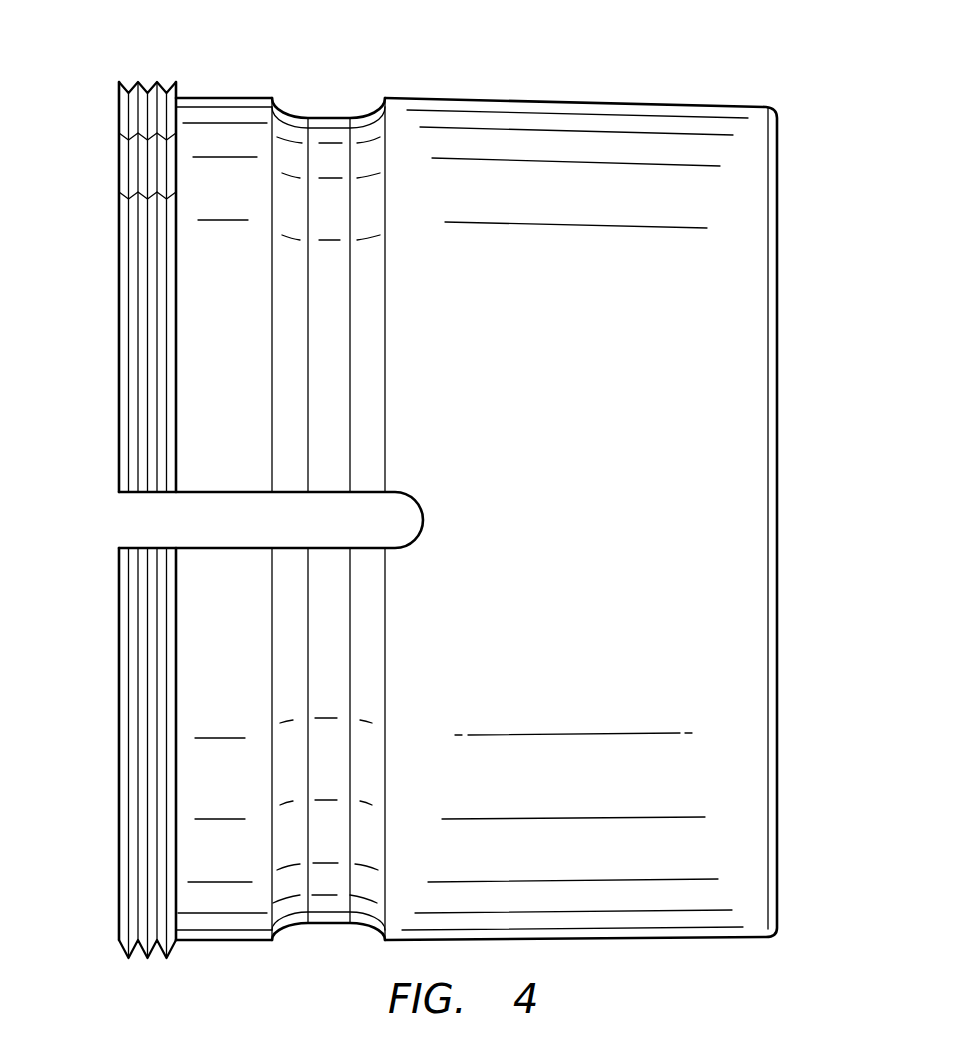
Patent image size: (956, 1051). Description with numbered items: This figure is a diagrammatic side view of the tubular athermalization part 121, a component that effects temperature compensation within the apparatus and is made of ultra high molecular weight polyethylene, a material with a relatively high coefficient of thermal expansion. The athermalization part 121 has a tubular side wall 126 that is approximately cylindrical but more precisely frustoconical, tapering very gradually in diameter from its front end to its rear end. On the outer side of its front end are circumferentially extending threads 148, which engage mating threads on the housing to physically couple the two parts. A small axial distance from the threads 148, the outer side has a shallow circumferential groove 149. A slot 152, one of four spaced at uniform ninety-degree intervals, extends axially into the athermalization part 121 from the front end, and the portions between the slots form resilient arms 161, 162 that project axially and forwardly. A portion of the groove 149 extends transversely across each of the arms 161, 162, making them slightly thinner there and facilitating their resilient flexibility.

The athermalization part 121 is at (778, 145).
The tubular side wall 126 is at (597, 123).
The threads 148 is at (165, 82).
The groove 149 is at (328, 118).
The slot 152 is at (223, 546).
The resilient arm 161 is at (193, 255).
The resilient arm 162 is at (190, 781).